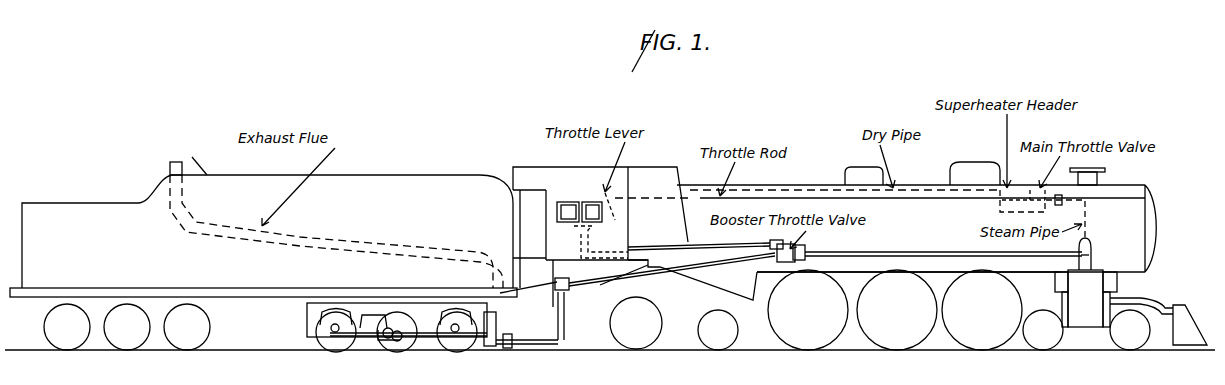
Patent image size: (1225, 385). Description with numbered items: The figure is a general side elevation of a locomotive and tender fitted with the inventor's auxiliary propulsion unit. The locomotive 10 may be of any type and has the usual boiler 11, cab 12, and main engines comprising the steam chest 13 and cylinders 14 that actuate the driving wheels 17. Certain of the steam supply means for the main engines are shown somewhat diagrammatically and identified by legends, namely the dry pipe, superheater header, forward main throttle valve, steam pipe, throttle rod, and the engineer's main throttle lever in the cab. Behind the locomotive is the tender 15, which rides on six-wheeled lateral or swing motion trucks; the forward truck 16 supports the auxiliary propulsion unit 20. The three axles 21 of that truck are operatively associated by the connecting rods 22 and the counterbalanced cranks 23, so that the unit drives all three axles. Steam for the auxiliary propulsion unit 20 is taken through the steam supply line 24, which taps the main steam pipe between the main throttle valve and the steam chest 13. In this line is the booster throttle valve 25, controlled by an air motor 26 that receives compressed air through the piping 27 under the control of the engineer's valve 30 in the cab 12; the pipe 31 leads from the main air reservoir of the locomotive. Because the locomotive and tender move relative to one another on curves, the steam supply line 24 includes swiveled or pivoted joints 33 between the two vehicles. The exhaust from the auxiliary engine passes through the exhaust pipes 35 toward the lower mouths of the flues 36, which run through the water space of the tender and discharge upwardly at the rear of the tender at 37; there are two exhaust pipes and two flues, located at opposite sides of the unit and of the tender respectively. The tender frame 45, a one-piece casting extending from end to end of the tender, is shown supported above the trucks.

The locomotive 10 is at (808, 184).
The boiler 11 is at (912, 258).
The cab 12 is at (565, 182).
The steam chest 13 is at (1090, 284).
The cylinders 14 is at (1088, 325).
The locomotive tender 15 is at (436, 160).
The forward truck 16 is at (307, 318).
The driving wheels 17 is at (822, 337).
The auxiliary propulsion unit 20 is at (432, 342).
The axles 21 is at (340, 320).
The connecting rods 22 is at (372, 338).
The counterbalanced cranks 23 is at (462, 316).
The steam supply line 24 is at (874, 254).
The booster throttle valve 25 is at (790, 262).
The air motor 26 is at (770, 244).
The piping 27 is at (641, 248).
The engineer's valve 30 is at (598, 230).
The pipe 31 is at (665, 270).
The swiveled or pivoted joints 33 is at (570, 286).
The exhaust pipes 35 is at (500, 314).
The flues 36 is at (386, 244).
The rear discharge of flues 37 is at (170, 168).
The tender frame 45 is at (228, 294).